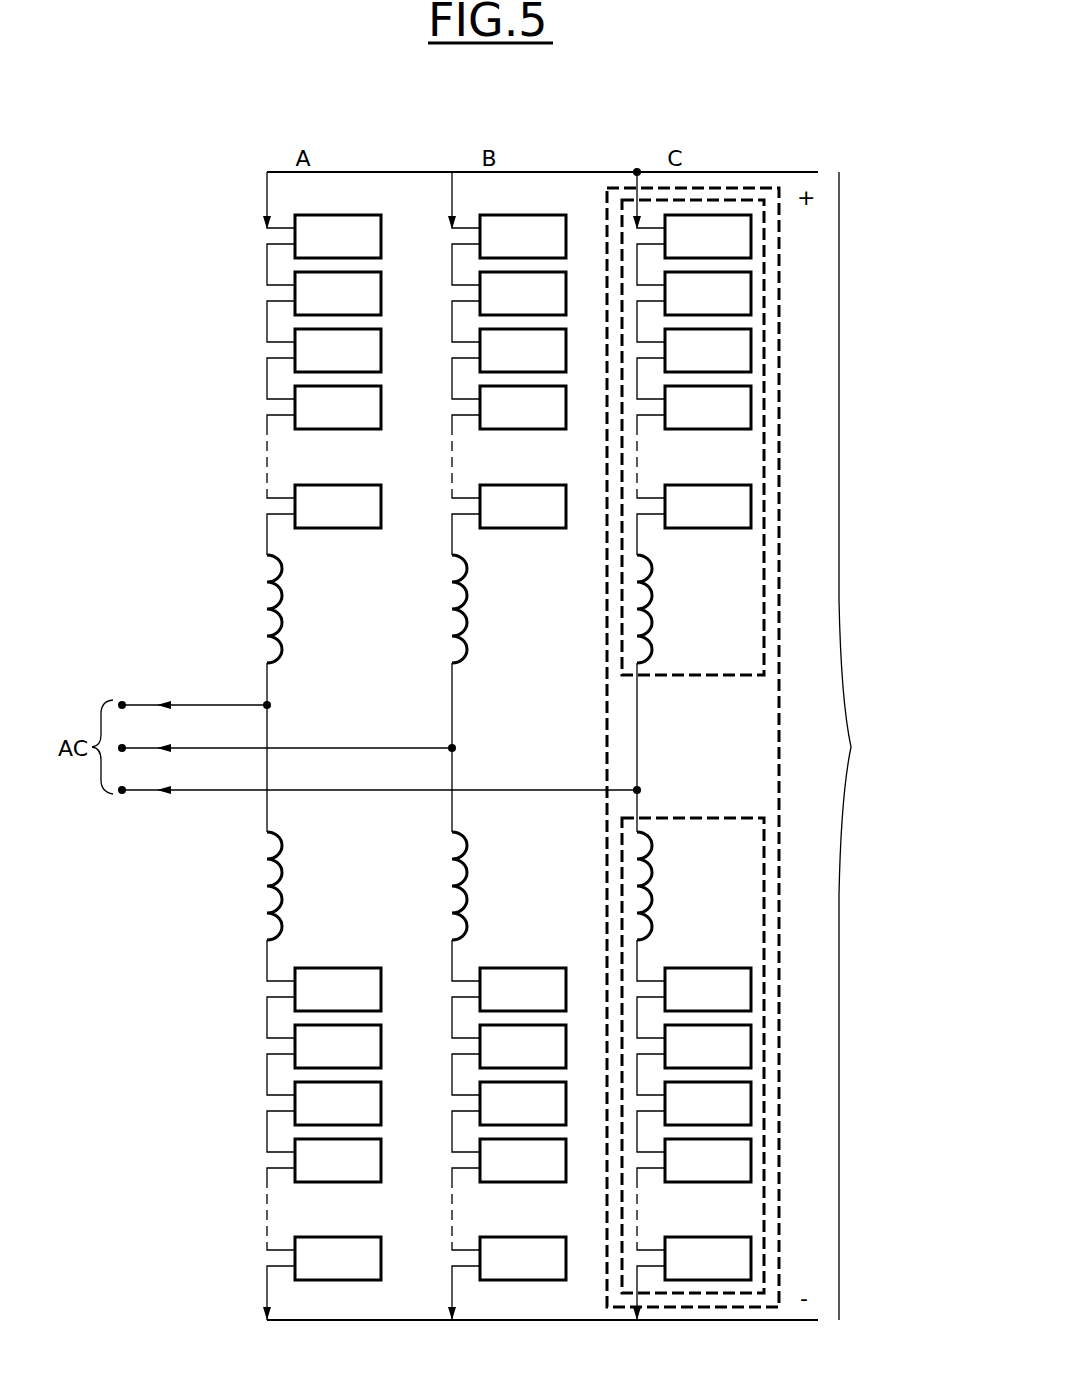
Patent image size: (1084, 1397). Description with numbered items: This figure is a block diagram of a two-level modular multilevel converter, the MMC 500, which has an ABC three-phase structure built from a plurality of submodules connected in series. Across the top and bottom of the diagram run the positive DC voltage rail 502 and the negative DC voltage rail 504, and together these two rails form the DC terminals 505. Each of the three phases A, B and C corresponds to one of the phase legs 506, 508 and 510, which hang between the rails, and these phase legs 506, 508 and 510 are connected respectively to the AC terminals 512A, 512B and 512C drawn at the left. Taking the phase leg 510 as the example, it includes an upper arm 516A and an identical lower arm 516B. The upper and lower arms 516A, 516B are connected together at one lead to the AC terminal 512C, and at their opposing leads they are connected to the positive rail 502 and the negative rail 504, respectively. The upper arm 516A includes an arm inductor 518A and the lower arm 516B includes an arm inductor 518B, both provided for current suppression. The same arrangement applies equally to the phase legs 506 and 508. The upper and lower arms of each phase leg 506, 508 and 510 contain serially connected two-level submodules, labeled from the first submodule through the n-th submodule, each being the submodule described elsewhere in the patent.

The MMC 500 is at (587, 127).
The positive DC voltage rail 502 is at (805, 172).
The negative DC voltage rail 504 is at (805, 1322).
The DC terminals 505 is at (894, 746).
The phase leg 506 is at (265, 1257).
The phase leg 508 is at (450, 1257).
The phase leg 510 is at (604, 1257).
The AC terminal 512A is at (194, 694).
The AC terminal 512B is at (287, 736).
The AC terminal 512C is at (377, 778).
The upper arm 516A is at (692, 677).
The lower arm 516B is at (692, 816).
The arm inductor 518A is at (678, 580).
The arm inductor 518B is at (678, 911).